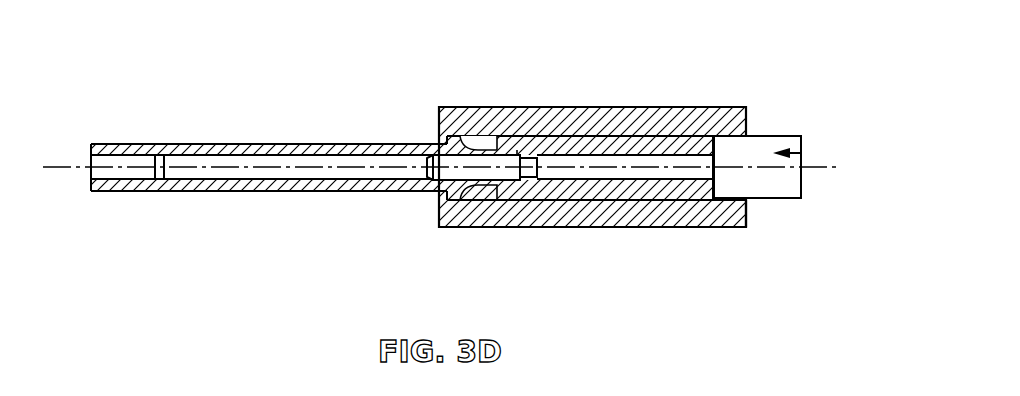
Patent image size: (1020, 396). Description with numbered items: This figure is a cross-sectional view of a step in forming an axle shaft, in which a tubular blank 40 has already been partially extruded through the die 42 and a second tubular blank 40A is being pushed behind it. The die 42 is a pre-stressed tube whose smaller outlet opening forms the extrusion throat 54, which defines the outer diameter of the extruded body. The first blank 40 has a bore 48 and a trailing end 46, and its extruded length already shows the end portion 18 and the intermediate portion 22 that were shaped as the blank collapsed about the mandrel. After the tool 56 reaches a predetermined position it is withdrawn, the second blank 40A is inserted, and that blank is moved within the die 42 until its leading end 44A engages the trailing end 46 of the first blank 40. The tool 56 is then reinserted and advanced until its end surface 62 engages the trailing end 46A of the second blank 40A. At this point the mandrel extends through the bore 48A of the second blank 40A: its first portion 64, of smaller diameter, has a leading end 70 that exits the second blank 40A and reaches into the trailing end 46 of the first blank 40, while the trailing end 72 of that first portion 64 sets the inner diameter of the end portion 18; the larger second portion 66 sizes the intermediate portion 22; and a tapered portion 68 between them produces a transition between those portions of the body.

The end portion 18 is at (110, 150).
The intermediate portion 22 is at (175, 153).
The tubular blank 40 is at (243, 143).
The tubular blank 40A is at (590, 147).
The die 42 is at (675, 120).
The leading end 44A is at (463, 137).
The trailing end 46 is at (505, 150).
The trailing end 46A is at (717, 145).
The bore 48 is at (192, 173).
The bore 48A is at (623, 178).
The extrusion throat 54 is at (438, 190).
The tool 56 is at (800, 153).
The surface 62 is at (703, 200).
The first portion 64 is at (467, 173).
The second portion 66 is at (623, 162).
The tapered portion 68 is at (530, 173).
The leading end 70 is at (430, 170).
The trailing end 72 is at (508, 180).